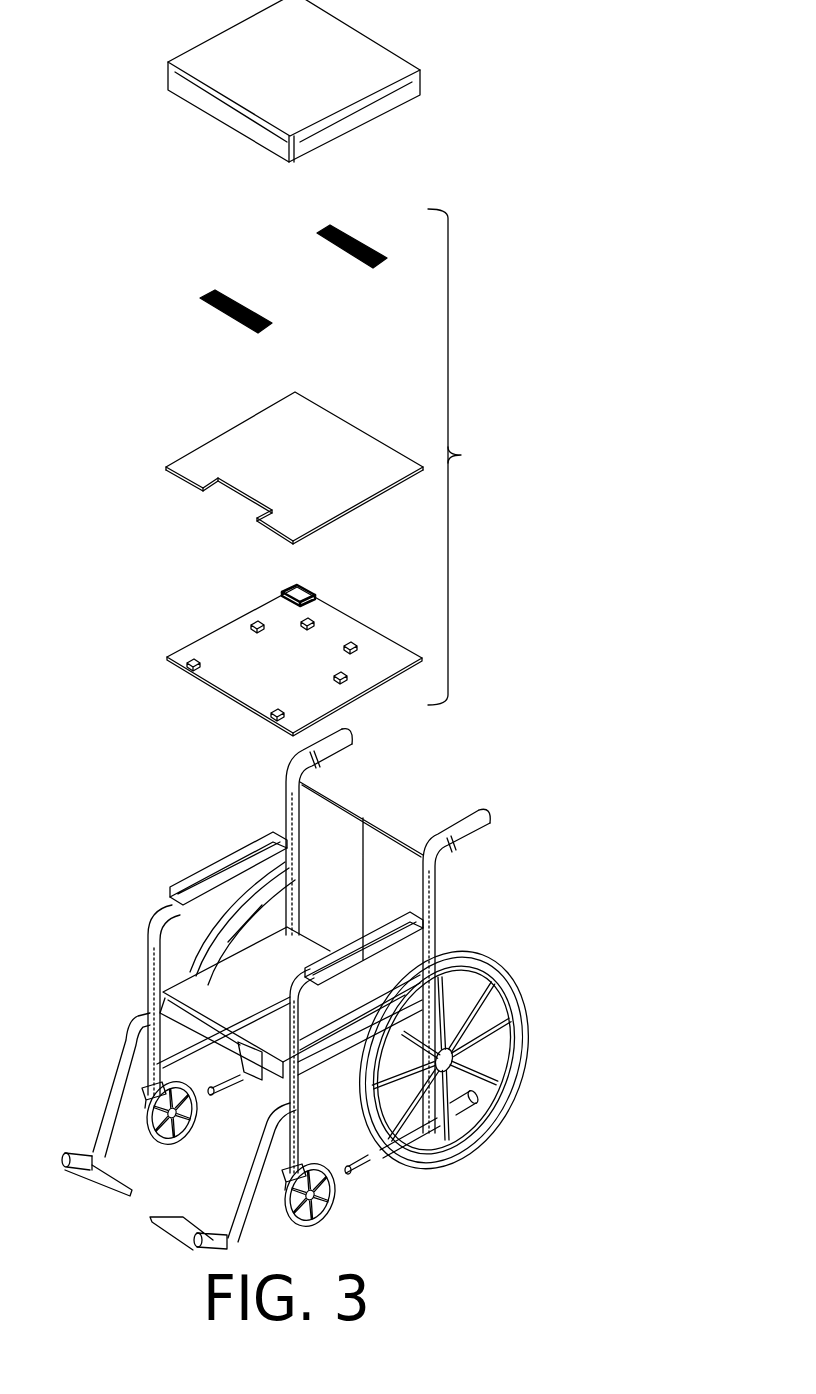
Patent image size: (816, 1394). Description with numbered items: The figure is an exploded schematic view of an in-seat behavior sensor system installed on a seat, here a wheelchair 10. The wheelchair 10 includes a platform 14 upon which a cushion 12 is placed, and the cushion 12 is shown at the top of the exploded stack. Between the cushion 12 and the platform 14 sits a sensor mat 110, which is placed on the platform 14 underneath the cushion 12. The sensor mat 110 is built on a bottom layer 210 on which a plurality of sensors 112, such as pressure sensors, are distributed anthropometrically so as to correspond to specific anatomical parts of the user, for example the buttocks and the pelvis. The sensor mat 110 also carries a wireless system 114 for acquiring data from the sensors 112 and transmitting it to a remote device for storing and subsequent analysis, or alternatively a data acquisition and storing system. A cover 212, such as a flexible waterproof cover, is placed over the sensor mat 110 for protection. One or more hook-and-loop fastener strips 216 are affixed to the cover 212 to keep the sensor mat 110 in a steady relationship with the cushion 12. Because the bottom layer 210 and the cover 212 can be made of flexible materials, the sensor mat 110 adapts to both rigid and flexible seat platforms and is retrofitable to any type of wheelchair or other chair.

The wheelchair 10 is at (309, 989).
The cushion 12 is at (362, 32).
The platform 14 is at (185, 1003).
The sensor mat 110 is at (328, 483).
The sensors 112 is at (255, 622).
The wireless system 114 is at (300, 585).
The bottom layer 210 is at (204, 636).
The cover 212 is at (235, 426).
The hook-and-loop fastener strips 216 is at (228, 315).